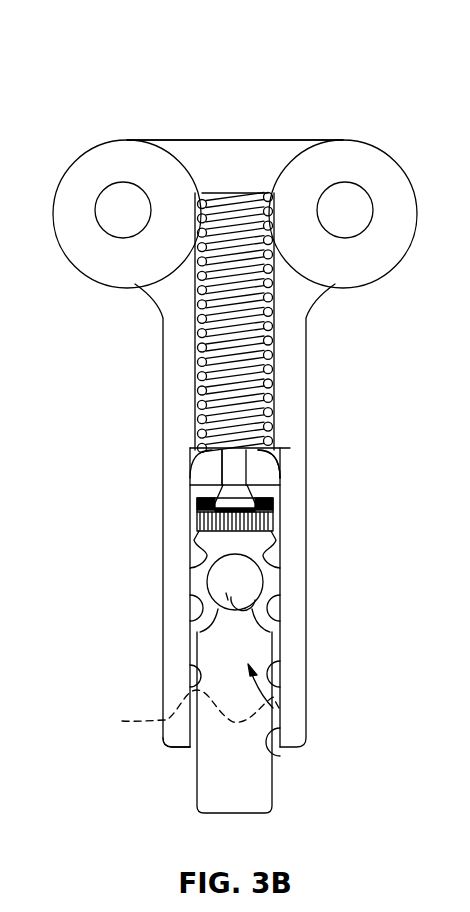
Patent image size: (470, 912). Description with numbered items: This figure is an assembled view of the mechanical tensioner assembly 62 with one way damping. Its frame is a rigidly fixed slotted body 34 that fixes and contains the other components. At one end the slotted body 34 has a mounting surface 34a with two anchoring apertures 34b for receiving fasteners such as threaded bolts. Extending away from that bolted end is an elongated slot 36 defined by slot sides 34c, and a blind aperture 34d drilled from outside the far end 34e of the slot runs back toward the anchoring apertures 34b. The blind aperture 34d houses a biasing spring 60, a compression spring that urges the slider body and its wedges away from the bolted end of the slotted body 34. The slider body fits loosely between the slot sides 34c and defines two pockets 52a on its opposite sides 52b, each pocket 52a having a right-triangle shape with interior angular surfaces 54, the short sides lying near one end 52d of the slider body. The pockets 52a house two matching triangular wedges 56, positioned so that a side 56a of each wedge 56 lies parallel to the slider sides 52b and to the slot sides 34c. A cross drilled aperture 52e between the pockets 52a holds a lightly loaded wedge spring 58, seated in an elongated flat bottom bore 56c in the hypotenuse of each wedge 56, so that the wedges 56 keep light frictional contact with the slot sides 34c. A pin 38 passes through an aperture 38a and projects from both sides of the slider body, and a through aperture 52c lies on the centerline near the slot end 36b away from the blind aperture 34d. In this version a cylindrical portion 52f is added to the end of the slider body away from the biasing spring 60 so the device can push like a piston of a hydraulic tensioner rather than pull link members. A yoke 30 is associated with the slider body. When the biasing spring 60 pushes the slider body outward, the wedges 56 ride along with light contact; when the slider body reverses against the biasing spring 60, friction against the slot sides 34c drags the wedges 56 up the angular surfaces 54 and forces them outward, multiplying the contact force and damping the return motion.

The yoke 30 is at (233, 466).
The slotted body 34 is at (246, 140).
The mounting surface 34a is at (278, 138).
The anchoring apertures 34b is at (131, 186).
The slot sides 34c is at (194, 683).
The blind aperture 34d is at (212, 200).
The far end 34e is at (190, 750).
The slot 36 is at (280, 712).
The slot end 36b is at (182, 708).
The pin 38 is at (200, 631).
The pin aperture 38a is at (280, 631).
The pockets 52a is at (196, 528).
The slider body sides 52b is at (194, 617).
The through aperture 52c is at (272, 760).
The slider body end 52d is at (288, 448).
The cross drilled aperture 52e is at (223, 465).
The cylindrical portion 52f is at (222, 795).
The angular surfaces 54 is at (204, 571).
The wedges 56 is at (189, 500).
The wedge side 56a is at (189, 514).
The flat bottom bore 56c is at (198, 533).
The wedge spring 58 is at (273, 460).
The biasing spring 60 is at (238, 324).
The mechanical tensioner assembly 62 is at (173, 107).